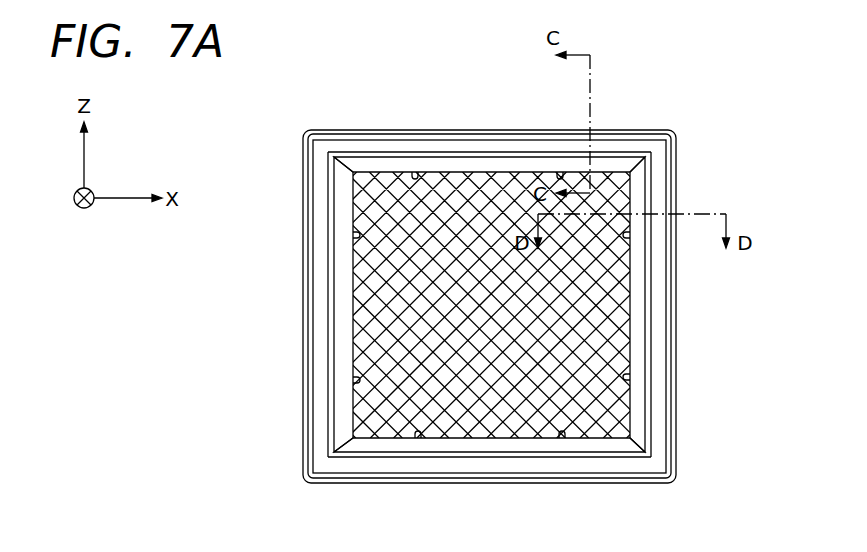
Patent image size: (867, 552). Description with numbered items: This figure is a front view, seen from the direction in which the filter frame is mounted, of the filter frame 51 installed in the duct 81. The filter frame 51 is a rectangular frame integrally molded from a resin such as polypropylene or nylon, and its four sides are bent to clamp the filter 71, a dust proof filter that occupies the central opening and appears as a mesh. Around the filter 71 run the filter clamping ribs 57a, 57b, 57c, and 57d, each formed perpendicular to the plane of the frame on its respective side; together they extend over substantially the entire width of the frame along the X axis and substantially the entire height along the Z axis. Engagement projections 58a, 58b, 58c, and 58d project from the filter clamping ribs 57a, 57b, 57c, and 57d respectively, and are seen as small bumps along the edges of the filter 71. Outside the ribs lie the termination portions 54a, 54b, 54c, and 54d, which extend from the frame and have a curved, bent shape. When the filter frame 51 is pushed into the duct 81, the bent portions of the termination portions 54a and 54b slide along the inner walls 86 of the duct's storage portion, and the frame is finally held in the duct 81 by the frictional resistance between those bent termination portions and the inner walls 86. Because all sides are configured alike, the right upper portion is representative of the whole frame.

The duct 81 is at (281, 165).
The filter frame 51 is at (422, 108).
The inner wall 86 is at (490, 139).
The termination portion 54a is at (530, 150).
The termination portion 54b is at (659, 342).
The termination portion 54c is at (506, 466).
The termination portion 54d is at (320, 311).
The filter clamping rib 57a is at (457, 156).
The filter clamping rib 57b is at (644, 303).
The filter clamping rib 57c is at (460, 452).
The filter clamping rib 57d is at (335, 259).
The engagement projections 58a is at (414, 168).
The engagement projections 58b is at (631, 235).
The engagement projections 58c is at (418, 440).
The engagement projections 58d is at (351, 235).
The filter 71 is at (366, 420).